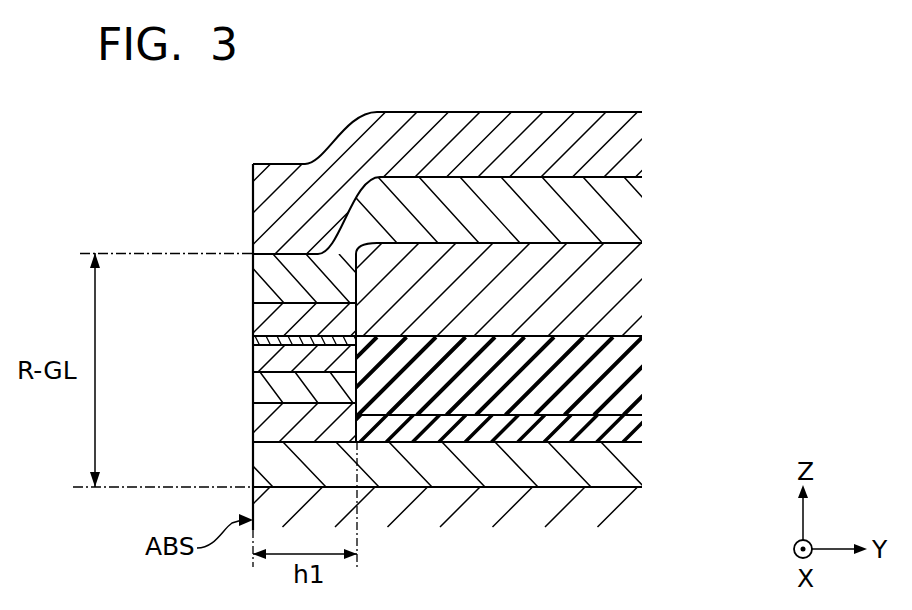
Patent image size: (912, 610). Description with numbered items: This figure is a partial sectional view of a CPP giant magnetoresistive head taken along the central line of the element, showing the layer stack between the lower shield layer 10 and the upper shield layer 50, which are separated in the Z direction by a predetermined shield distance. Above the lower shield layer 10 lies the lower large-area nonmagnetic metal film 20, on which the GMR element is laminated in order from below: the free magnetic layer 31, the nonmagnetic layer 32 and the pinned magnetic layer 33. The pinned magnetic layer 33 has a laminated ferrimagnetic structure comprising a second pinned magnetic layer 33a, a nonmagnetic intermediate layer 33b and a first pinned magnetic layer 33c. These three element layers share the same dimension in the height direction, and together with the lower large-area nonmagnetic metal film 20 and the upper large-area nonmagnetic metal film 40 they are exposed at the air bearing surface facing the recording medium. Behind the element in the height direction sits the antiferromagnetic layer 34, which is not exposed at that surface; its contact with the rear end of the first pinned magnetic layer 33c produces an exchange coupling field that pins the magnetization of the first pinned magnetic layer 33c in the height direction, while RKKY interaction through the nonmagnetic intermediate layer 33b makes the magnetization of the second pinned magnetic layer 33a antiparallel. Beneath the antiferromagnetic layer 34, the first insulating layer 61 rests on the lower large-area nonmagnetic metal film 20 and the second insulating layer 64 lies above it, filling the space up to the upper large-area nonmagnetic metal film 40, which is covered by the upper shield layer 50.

The lower shield layer 10 is at (632, 507).
The lower large-area nonmagnetic metal film 20 is at (632, 462).
The free magnetic layer 31 is at (253, 418).
The nonmagnetic layer 32 is at (253, 388).
The pinned magnetic layer 33 is at (247, 337).
The second pinned magnetic layer 33a is at (253, 357).
The nonmagnetic intermediate layer 33b is at (253, 340).
The first pinned magnetic layer 33c is at (253, 320).
The antiferromagnetic layer 34 is at (633, 292).
The upper large-area nonmagnetic metal film 40 is at (633, 208).
The upper shield layer 50 is at (633, 146).
The first insulating layer 61 is at (632, 433).
The second insulating layer 64 is at (632, 388).